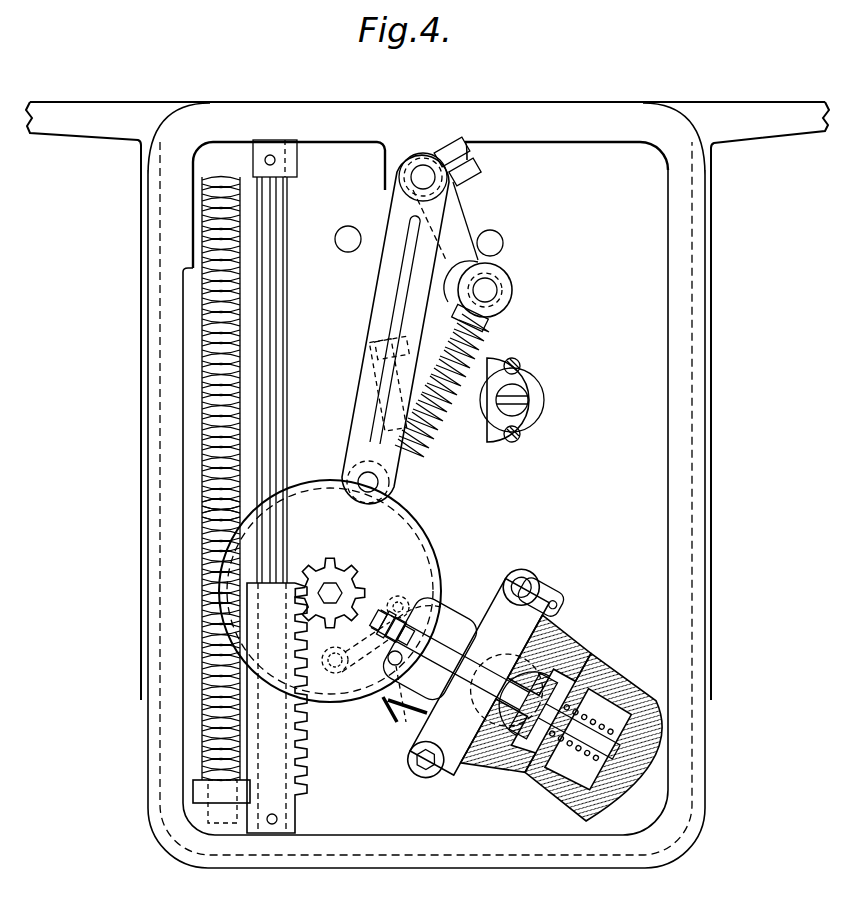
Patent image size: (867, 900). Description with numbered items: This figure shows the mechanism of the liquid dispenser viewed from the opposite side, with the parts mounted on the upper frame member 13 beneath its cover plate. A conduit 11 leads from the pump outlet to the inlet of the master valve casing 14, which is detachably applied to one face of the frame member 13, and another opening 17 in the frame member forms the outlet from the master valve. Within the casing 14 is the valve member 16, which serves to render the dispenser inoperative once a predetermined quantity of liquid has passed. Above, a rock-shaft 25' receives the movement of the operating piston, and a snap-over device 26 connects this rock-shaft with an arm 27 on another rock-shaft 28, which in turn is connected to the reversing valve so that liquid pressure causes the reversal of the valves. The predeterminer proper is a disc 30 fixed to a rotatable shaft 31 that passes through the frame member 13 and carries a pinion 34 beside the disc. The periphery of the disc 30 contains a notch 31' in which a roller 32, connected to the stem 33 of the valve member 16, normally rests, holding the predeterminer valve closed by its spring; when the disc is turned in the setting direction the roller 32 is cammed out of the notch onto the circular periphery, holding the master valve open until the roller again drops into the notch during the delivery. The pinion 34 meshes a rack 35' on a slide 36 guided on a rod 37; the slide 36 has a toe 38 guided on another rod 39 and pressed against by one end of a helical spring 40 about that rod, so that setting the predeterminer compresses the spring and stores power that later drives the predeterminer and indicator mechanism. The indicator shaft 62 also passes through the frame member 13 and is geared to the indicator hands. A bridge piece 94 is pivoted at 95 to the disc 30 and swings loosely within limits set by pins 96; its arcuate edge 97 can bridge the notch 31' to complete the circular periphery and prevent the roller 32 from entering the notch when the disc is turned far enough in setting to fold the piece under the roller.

The conduit 11 is at (558, 790).
The upper frame member 13 is at (707, 800).
The master valve casing 14 is at (575, 652).
The valve member 16 is at (618, 683).
The opening 17 is at (462, 742).
The rock-shaft 25' is at (399, 320).
The snap-over device 26 is at (514, 292).
The arm 27 is at (378, 416).
The rock-shaft 28 is at (386, 380).
The disc 30 is at (428, 530).
The rotatable shaft 31 is at (335, 582).
The notch 31' is at (432, 599).
The roller 32 is at (438, 622).
The stem 33 is at (342, 668).
The pinion 34 is at (368, 600).
The rack 35' is at (332, 694).
The slide 36 is at (272, 786).
The rod 37 is at (288, 314).
The toe 38 is at (198, 790).
The rod 39 is at (203, 512).
The helical spring 40 is at (203, 383).
The indicator shaft 62 is at (520, 407).
The bridge piece 94 is at (383, 715).
The pivot 95 is at (392, 680).
The pins 96 is at (410, 600).
The arcuate edge 97 is at (378, 718).